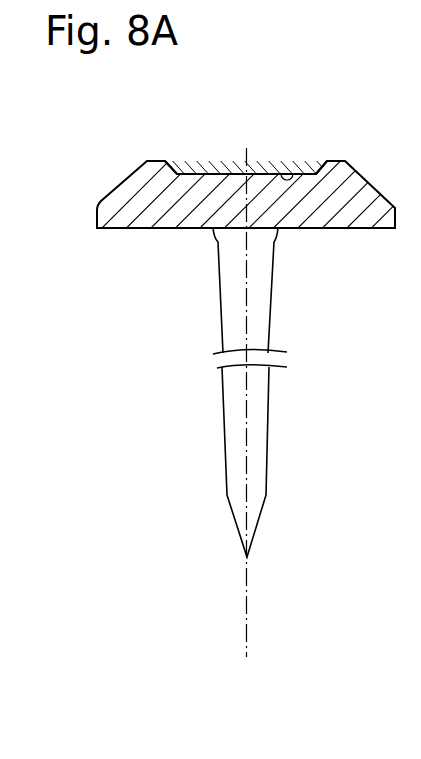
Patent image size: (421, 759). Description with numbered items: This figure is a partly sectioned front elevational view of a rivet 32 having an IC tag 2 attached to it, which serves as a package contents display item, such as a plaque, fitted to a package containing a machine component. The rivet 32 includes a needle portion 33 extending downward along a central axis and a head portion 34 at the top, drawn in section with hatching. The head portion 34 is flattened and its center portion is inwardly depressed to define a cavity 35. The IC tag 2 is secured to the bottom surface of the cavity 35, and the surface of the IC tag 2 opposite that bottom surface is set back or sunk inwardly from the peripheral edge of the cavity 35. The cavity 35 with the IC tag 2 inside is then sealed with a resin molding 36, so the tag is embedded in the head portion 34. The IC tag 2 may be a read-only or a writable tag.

The IC tag 2 is at (230, 168).
The rivet 32 is at (193, 255).
The needle portion 33 is at (260, 307).
The head portion 34 is at (157, 202).
The cavity 35 is at (291, 172).
The resin molding 36 is at (277, 168).